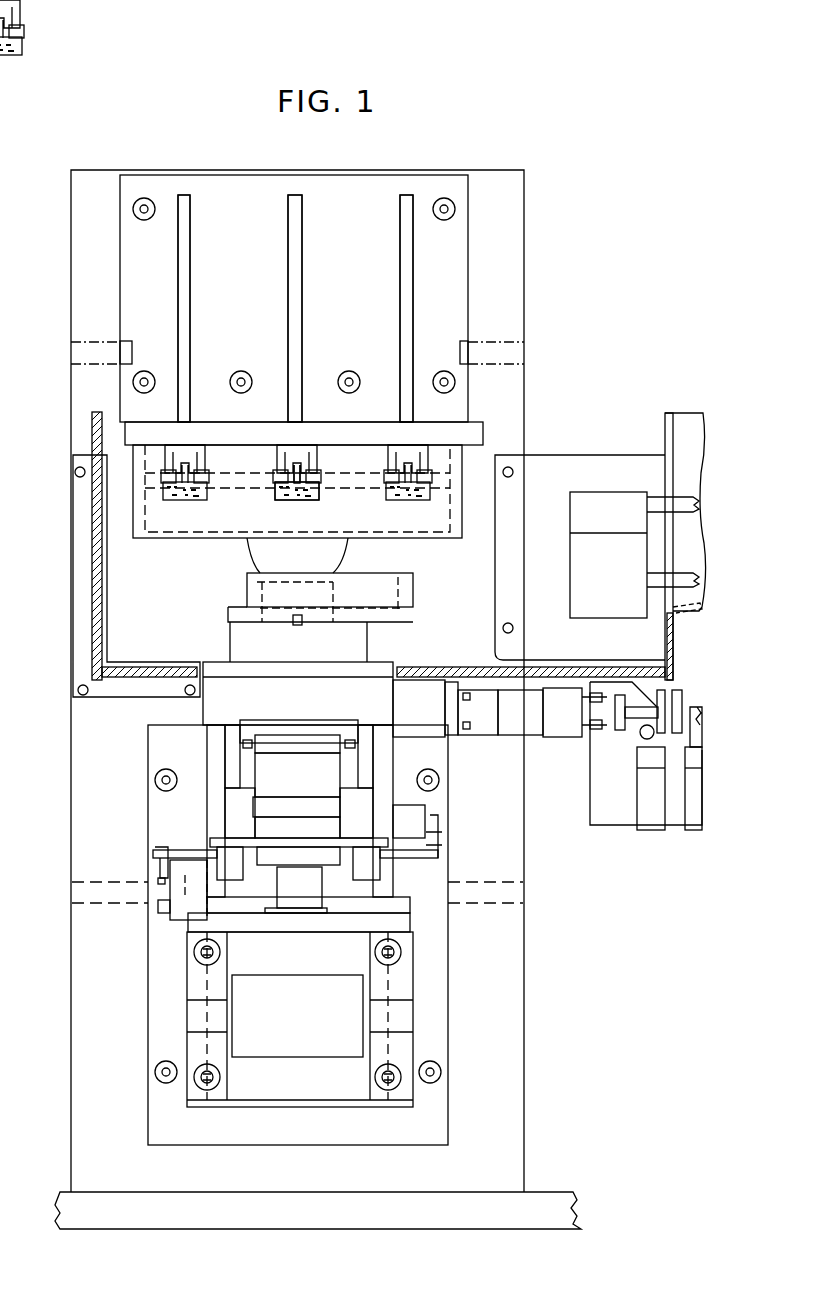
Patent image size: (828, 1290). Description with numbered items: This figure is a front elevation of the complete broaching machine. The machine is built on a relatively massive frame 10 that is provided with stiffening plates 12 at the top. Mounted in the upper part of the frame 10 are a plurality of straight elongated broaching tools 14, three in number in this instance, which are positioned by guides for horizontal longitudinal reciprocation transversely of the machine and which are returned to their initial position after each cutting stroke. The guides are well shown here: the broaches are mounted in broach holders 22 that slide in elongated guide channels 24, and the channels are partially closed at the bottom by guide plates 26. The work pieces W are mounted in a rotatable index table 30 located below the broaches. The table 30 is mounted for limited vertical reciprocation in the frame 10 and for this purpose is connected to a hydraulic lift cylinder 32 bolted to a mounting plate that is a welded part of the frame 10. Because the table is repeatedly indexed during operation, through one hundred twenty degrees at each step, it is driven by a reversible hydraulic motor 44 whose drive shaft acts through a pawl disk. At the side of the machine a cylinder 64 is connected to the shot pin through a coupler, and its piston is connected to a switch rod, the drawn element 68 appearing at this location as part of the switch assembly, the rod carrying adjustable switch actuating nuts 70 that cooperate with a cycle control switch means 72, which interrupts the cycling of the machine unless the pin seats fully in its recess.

The frame 10 is at (529, 1000).
The stiffening plates 12 is at (428, 290).
The broaching tools 14 is at (290, 471).
The broach holders 22 is at (310, 453).
The guide channels 24 is at (318, 465).
The guide plates 26 is at (313, 481).
The work pieces W is at (306, 499).
The index table 30 is at (395, 530).
The hydraulic lift cylinder 32 is at (320, 1023).
The reversible hydraulic motor 44 is at (312, 790).
The cylinder 64 is at (527, 722).
The bracket 68 is at (638, 717).
The switch actuating nuts 70 is at (682, 686).
The cycle control switch means 72 is at (653, 818).